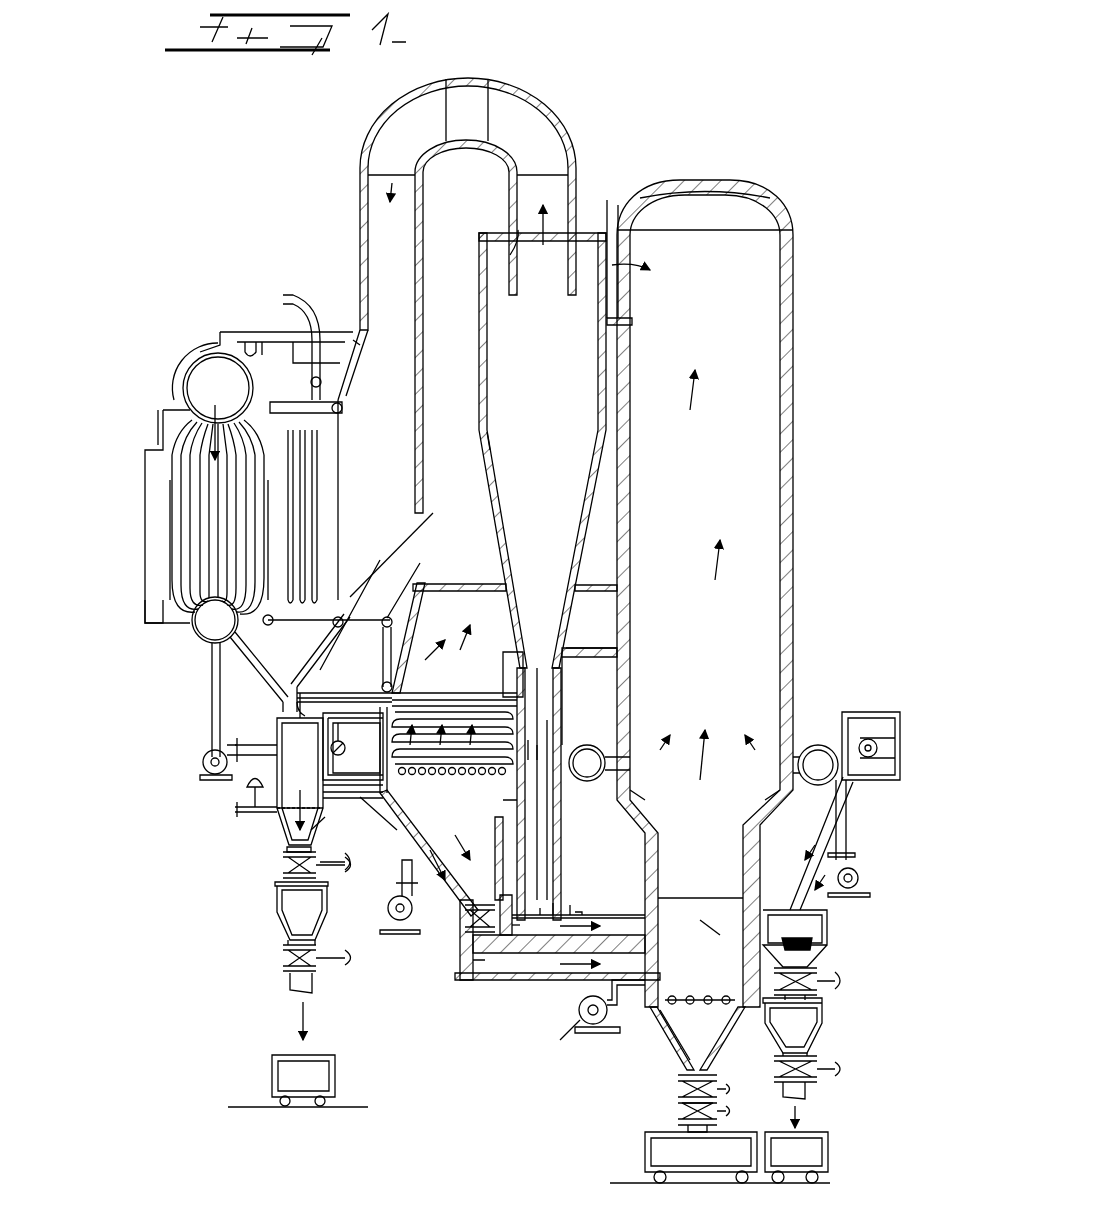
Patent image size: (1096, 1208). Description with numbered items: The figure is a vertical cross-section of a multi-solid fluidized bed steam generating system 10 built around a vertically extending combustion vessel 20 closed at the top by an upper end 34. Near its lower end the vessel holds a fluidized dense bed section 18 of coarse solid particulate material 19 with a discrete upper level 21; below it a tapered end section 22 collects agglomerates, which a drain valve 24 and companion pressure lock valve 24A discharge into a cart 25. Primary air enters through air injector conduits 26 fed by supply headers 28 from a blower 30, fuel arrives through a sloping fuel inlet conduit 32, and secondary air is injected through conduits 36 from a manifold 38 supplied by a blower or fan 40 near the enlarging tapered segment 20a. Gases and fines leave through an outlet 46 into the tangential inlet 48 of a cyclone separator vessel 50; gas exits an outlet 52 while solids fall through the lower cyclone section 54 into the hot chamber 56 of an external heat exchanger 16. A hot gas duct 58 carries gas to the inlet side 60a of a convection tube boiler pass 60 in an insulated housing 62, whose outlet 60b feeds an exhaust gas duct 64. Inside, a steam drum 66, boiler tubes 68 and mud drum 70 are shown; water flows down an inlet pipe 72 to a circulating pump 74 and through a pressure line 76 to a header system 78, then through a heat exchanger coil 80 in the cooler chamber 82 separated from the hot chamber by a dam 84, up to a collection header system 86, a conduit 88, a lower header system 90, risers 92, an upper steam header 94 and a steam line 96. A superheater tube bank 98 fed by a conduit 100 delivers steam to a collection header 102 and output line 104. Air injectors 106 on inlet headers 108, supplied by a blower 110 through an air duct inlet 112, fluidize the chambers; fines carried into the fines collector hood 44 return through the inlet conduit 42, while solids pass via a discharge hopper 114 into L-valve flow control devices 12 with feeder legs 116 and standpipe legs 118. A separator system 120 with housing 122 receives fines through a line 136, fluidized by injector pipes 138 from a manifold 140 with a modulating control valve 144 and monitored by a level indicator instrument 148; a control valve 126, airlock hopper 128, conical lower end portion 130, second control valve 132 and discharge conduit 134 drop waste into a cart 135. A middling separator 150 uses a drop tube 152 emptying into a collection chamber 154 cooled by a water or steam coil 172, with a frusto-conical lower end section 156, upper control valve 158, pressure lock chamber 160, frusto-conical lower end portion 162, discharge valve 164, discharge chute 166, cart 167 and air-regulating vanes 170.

The multi-solid fluidized bed steam generating system 10 is at (432, 1067).
The L-valve type flow control device 12 is at (455, 975).
The external heat exchanger 16 is at (380, 758).
The fluidized dense bed section 18 is at (690, 975).
The coarse solid particulate material 19 is at (672, 1010).
The combustion vessel 20 is at (800, 580).
The tapered segment 20a is at (635, 835).
The upper level 21 is at (690, 895).
The tapered end section 22 is at (665, 1040).
The drain valve 24 is at (676, 1089).
The pressure lock valve 24A is at (728, 1112).
The cart 25 is at (645, 1140).
The air injector conduit 26 is at (725, 1030).
The supply header 28 is at (610, 1030).
The blower 30 is at (560, 1040).
The fuel inlet conduit 32 is at (855, 780).
The reactor dome 34 is at (705, 180).
The secondary air injector conduit 36 is at (632, 790).
The manifold 38 is at (590, 745).
The blower or fan 40 is at (850, 865).
The inlet conduit 42 is at (602, 612).
The fines collector hood 44 is at (440, 585).
The outlet 46 is at (625, 265).
The tangentially directed inlet 48 is at (607, 232).
The cyclone separator vessel 50 is at (478, 320).
The outlet 52 is at (525, 250).
The lower cyclone section 54 is at (488, 492).
The hot chamber 56 is at (552, 682).
The hot gas duct 58 is at (520, 80).
The convection tube boiler pass 60 is at (210, 330).
The inlet side 60a is at (408, 520).
The outlet 60b is at (150, 490).
The insulated housing 62 is at (235, 645).
The exhaust gas duct 64 is at (160, 615).
The steam drum 66 is at (190, 375).
The boiler tubes 68 is at (213, 422).
The mud drum 70 is at (195, 635).
The inlet pipe 72 is at (210, 698).
The circulating pump 74 is at (200, 765).
The pressure line 76 is at (275, 735).
The header system 78 is at (528, 830).
The heat exchanger coil 80 is at (430, 712).
The secondary chamber 82 is at (516, 695).
The dam 84 is at (540, 742).
The collection header system 86 is at (445, 641).
The conduit 88 is at (344, 678).
The lower header system 90 is at (362, 598).
The risers 92 is at (270, 470).
The upper steam header 94 is at (345, 405).
The steam line 96 is at (355, 352).
The superheater tube bank 98 is at (302, 500).
The conduit 100 is at (252, 345).
The collection header 102 is at (322, 380).
The superheated steam output line 104 is at (293, 292).
The air injectors 106 is at (545, 795).
The inlet headers 108 is at (395, 813).
The blower 110 is at (465, 932).
The air duct inlet 112 is at (380, 865).
The discharge hopper 114 is at (440, 897).
The feeder leg 116 is at (535, 982).
The standpipe leg 118 is at (458, 955).
The separator system 120 is at (280, 845).
The housing 122 is at (260, 760).
The control valve 126 is at (283, 866).
The airlock hopper 128 is at (330, 900).
The conically-shaped lower end portion 130 is at (278, 925).
The second control valve 132 is at (283, 958).
The discharge conduit 134 is at (312, 985).
The cart 135 is at (335, 1065).
The line 136 is at (316, 825).
The fluid injector pipes 138 is at (277, 815).
The manifold 140 is at (250, 795).
The modulating control valve 144 is at (240, 812).
The electronic level indicator instrument 148 is at (345, 740).
The separator 150 is at (840, 845).
The drop tube 152 is at (828, 815).
The collection chamber 154 is at (828, 915).
The frusto-conically shaped lower end section 156 is at (848, 972).
The upper control valve 158 is at (818, 1000).
The pressure lock chamber 160 is at (824, 1020).
The frusto-conical lower end portion 162 is at (818, 1050).
The discharge valve 164 is at (838, 1078).
The discharge chute 166 is at (808, 1092).
The cart 167 is at (830, 1140).
The vanes 170 is at (860, 887).
The water or steam coil 172 is at (820, 945).